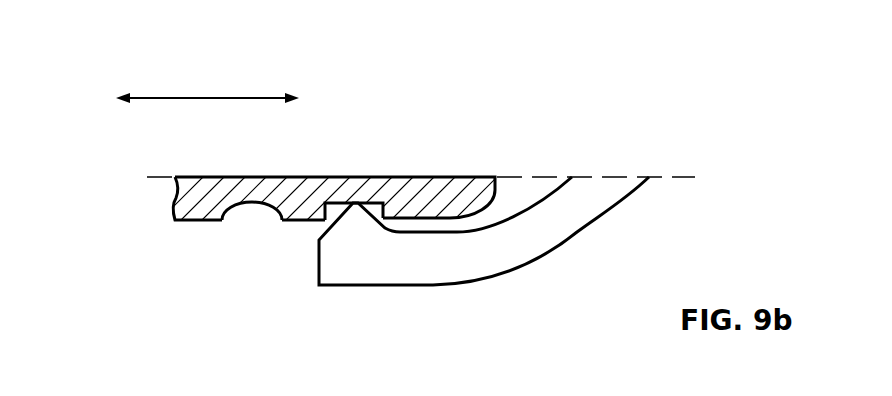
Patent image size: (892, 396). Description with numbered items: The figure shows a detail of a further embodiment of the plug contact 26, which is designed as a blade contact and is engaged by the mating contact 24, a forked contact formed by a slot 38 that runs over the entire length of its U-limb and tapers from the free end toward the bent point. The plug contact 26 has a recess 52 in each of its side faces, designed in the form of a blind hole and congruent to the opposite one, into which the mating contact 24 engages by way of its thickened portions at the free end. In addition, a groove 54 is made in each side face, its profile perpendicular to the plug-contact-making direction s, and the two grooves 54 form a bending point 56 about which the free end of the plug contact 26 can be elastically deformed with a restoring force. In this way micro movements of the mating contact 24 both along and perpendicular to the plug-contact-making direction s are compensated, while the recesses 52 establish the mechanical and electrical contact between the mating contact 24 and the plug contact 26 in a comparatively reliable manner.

The mating contact 24 is at (605, 190).
The plug contact 26 is at (212, 200).
The slot 38 is at (523, 188).
The recess 52 is at (380, 205).
The groove 54 is at (250, 203).
The bending point 56 is at (271, 165).
The plug-contact-making direction s is at (209, 97).